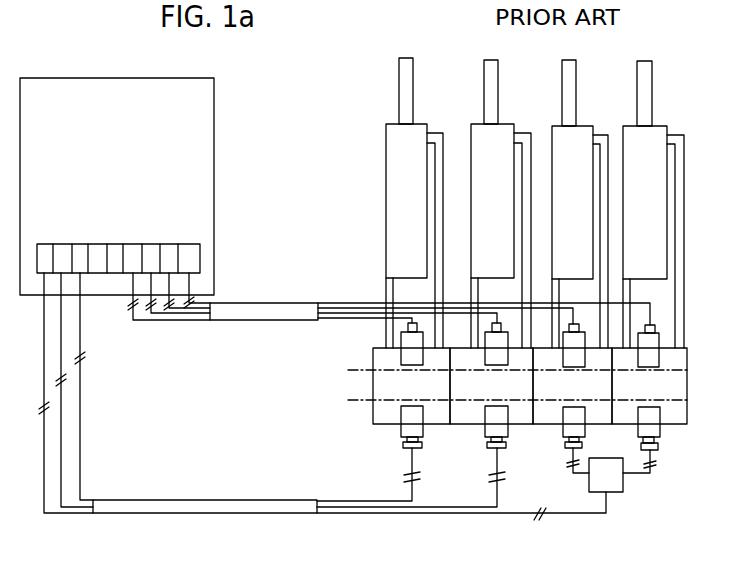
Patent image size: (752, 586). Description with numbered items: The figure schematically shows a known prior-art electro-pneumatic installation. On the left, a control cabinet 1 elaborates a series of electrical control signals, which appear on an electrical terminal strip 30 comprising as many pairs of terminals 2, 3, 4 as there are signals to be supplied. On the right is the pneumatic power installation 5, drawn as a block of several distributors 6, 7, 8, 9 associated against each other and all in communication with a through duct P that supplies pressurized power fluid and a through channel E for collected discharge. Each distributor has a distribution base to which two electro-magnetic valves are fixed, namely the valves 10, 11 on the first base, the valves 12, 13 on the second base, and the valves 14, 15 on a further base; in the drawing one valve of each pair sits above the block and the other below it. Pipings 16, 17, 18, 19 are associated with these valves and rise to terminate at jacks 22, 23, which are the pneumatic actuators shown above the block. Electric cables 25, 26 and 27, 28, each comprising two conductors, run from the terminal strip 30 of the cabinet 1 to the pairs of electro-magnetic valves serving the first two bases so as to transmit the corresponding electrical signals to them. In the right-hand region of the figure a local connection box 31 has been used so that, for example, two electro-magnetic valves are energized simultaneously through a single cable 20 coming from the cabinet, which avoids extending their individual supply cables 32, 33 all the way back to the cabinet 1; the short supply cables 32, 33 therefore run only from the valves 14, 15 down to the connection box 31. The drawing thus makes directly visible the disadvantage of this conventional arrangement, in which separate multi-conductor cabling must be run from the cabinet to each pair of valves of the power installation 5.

The control cabinet 1 is at (58, 78).
The pair of terminals 2 is at (45, 246).
The pair of terminals 3 is at (63, 246).
The pair of terminals 4 is at (82, 246).
The pneumatic power installation 5 is at (703, 325).
The distributor 6 is at (414, 395).
The distributor 7 is at (502, 395).
The distributor 8 is at (579, 395).
The distributor 9 is at (656, 395).
The electro-magnetic valve 10 is at (420, 360).
The electro-magnetic valve 11 is at (420, 433).
The electro-magnetic valve 12 is at (504, 360).
The electro-magnetic valve 13 is at (504, 433).
The electro-magnetic valve 14 is at (582, 434).
The electro-magnetic valve 15 is at (657, 434).
The piping 16 is at (385, 290).
The piping 17 is at (443, 250).
The piping 18 is at (472, 292).
The piping 19 is at (530, 282).
The cable 20 is at (565, 516).
The jack 22 is at (416, 209).
The jack 23 is at (504, 209).
The electric cable 25 is at (408, 458).
The electric cable 26 is at (343, 320).
The electric cable 27 is at (494, 458).
The electric cable 28 is at (454, 318).
The electrical terminal strip 30 is at (190, 244).
The local connection box 31 is at (615, 488).
The supply cable 32 is at (571, 452).
The supply cable 33 is at (654, 469).